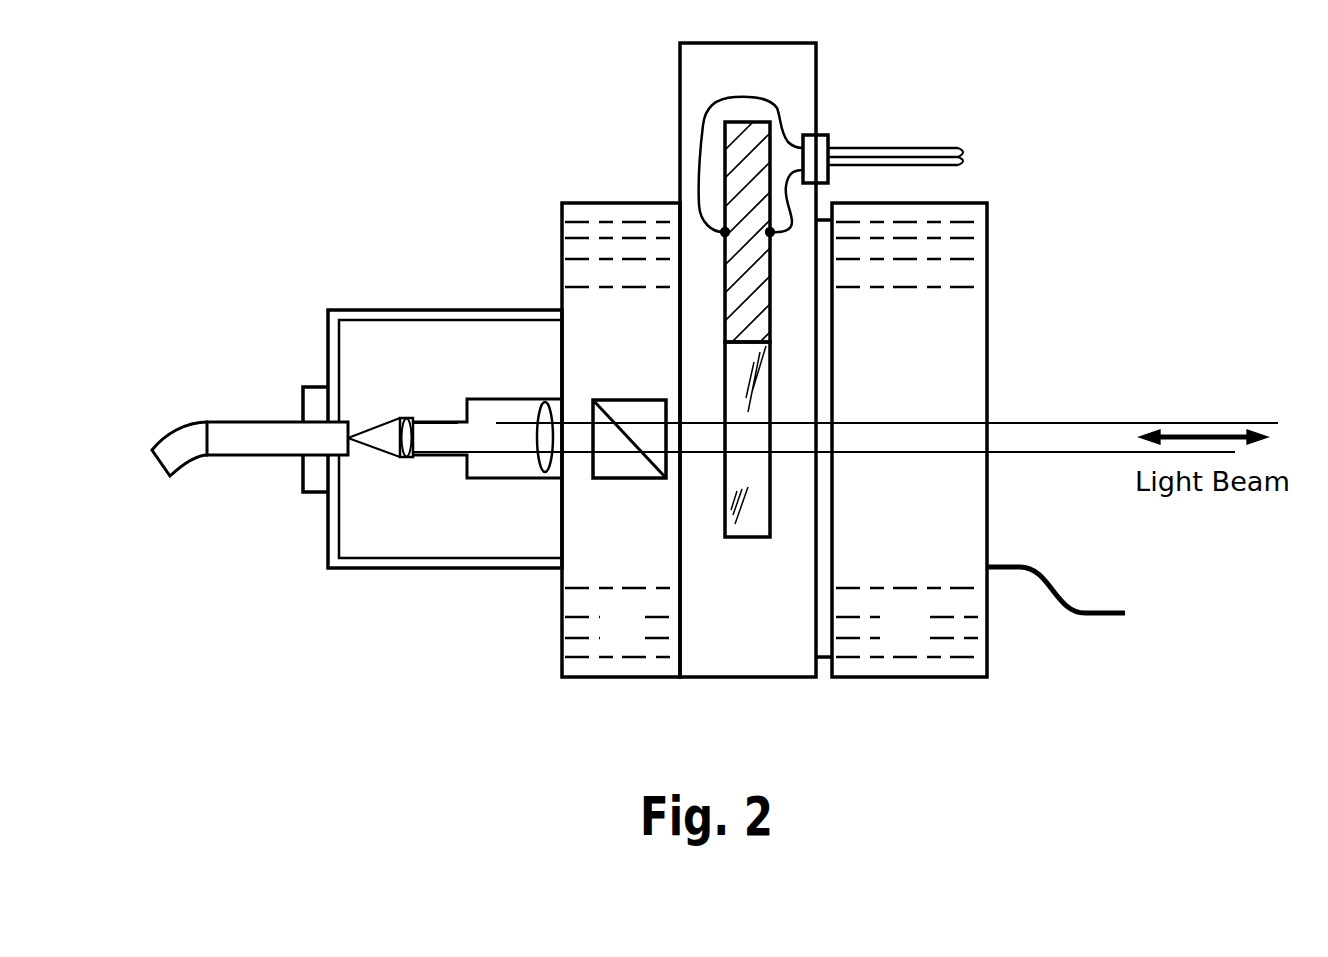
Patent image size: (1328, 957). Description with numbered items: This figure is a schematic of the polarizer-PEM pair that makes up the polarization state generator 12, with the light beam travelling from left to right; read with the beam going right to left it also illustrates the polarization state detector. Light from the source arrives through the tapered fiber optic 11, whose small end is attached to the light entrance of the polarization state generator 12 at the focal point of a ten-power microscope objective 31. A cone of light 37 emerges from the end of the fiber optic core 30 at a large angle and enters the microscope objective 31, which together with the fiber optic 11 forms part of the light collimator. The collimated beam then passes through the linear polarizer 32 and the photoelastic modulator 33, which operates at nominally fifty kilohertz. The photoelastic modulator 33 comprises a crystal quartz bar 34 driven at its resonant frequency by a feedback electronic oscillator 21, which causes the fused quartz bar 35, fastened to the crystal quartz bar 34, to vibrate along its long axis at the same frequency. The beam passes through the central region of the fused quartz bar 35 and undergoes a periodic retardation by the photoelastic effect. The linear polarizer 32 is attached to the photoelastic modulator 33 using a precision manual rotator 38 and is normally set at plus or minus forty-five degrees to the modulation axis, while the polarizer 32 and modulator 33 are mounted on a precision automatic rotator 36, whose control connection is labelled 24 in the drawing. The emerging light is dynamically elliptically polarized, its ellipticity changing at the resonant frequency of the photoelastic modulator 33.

The polarization state generator 12 is at (342, 111).
The tapered fiber optic 11 is at (198, 427).
The fiber optic core 30 is at (197, 447).
The cone of light 37 is at (368, 433).
The microscope objective 31 is at (487, 438).
The linear polarizer 32 is at (627, 409).
The photoelastic modulator 33 is at (805, 293).
The crystal quartz bar 34 is at (742, 185).
The fused quartz bar 35 is at (753, 481).
The precision automatic rotator 36 is at (920, 650).
The precision manual rotator 38 is at (640, 650).
The feedback electronic oscillator 21 is at (956, 159).
The rotator control cable 24 is at (1131, 609).